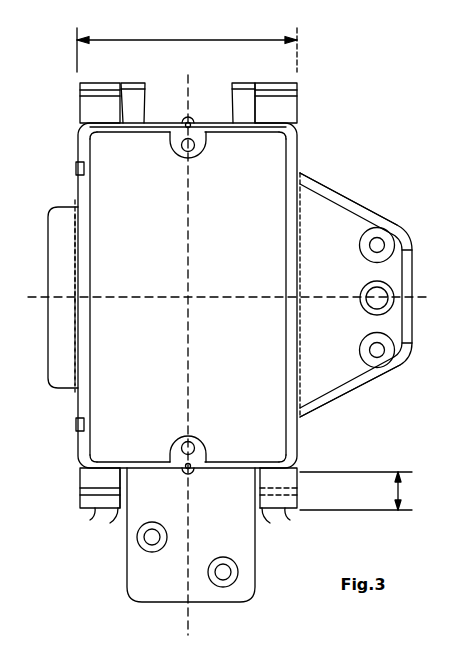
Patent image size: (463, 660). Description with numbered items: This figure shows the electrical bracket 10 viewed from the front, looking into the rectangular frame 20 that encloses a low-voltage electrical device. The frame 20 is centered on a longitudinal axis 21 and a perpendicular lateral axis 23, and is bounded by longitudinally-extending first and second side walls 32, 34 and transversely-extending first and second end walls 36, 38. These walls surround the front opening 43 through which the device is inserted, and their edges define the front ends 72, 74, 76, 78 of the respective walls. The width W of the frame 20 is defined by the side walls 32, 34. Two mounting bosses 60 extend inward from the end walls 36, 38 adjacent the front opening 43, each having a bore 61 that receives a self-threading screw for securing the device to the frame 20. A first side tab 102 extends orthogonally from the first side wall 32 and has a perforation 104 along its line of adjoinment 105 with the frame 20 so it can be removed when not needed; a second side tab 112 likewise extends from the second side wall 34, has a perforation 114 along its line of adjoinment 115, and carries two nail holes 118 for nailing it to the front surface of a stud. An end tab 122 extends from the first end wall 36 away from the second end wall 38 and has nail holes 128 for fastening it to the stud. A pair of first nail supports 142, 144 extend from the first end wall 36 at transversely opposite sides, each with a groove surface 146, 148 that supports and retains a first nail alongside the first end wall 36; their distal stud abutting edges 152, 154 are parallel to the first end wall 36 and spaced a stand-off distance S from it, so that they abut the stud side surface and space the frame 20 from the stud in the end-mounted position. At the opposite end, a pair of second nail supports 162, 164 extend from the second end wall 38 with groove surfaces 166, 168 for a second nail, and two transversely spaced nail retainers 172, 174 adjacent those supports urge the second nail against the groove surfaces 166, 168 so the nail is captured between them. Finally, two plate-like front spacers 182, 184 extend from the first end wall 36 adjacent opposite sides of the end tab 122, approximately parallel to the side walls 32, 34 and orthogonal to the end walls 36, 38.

The width of the frame W is at (187, 45).
The stand-off distance S is at (358, 491).
The electrical bracket 10 is at (388, 100).
The rectangular frame 20 is at (300, 139).
The longitudinal axis 21 is at (190, 332).
The lateral axis 23 is at (220, 297).
The first side wall 32 is at (90, 352).
The second side wall 34 is at (286, 368).
The first end wall 36 is at (118, 460).
The second end wall 38 is at (125, 134).
The front opening 43 is at (282, 176).
The mounting boss 60 is at (197, 153).
The bore 61 is at (183, 151).
The front end of first side wall 72 is at (90, 317).
The front end of second side wall 74 is at (286, 249).
The front end of first end wall 76 is at (151, 462).
The front end of second end wall 78 is at (253, 132).
The first side tab 102 is at (57, 208).
The perforation 104 is at (77, 251).
The line of adjoinment 105 is at (77, 279).
The second side tab 112 is at (318, 276).
The perforation 114 is at (300, 210).
The line of adjoinment 115 is at (298, 229).
The nail holes 118 is at (385, 255).
The end tab 122 is at (174, 502).
The nail holes 128 is at (214, 572).
The first nail support 142 is at (80, 480).
The first nail support 144 is at (300, 478).
The groove surface 146 is at (93, 495).
The groove surface 148 is at (285, 497).
The stud abutting edge 152 is at (95, 511).
The stud abutting edge 154 is at (285, 511).
The second nail support 162 is at (80, 110).
The second nail support 164 is at (297, 115).
The groove surface 166 is at (93, 98).
The groove surface 168 is at (280, 97).
The nail retainer 172 is at (146, 104).
The nail retainer 174 is at (232, 110).
The front spacer 182 is at (117, 511).
The front spacer 184 is at (261, 511).